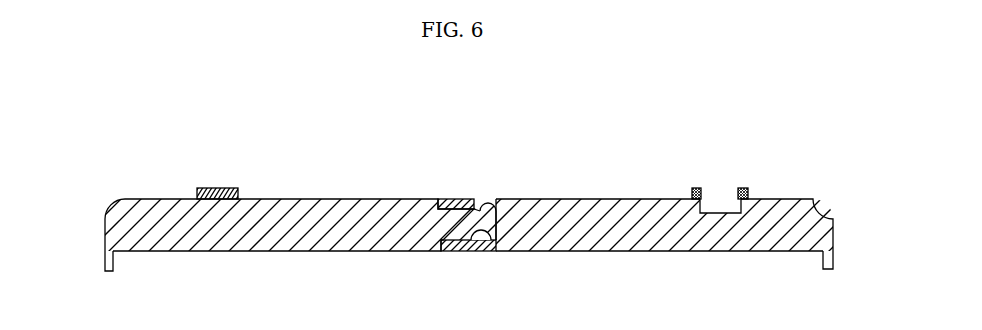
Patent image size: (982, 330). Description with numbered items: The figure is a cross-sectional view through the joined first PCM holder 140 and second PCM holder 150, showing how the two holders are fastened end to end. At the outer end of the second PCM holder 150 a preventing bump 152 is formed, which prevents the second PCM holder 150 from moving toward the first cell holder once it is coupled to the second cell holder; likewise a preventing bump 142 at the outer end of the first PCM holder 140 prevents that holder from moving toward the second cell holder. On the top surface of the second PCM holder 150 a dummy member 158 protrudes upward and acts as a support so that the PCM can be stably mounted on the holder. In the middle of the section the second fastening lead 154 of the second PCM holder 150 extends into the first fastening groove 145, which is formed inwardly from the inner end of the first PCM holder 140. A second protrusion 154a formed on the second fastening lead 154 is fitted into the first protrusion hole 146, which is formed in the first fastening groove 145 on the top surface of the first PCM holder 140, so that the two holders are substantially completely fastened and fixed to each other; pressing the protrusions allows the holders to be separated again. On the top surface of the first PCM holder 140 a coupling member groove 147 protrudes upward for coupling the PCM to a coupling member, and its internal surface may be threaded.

The first PCM holder 140 is at (800, 207).
The preventing bump 142 is at (835, 263).
The first fastening groove 145 is at (477, 231).
The first protrusion hole 146 is at (492, 198).
The coupling member groove 147 is at (740, 205).
The second PCM holder 150 is at (145, 207).
The preventing bump 152 is at (103, 264).
The second fastening lead 154 is at (450, 230).
The second protrusion 154a is at (485, 207).
The dummy member 158 is at (214, 187).